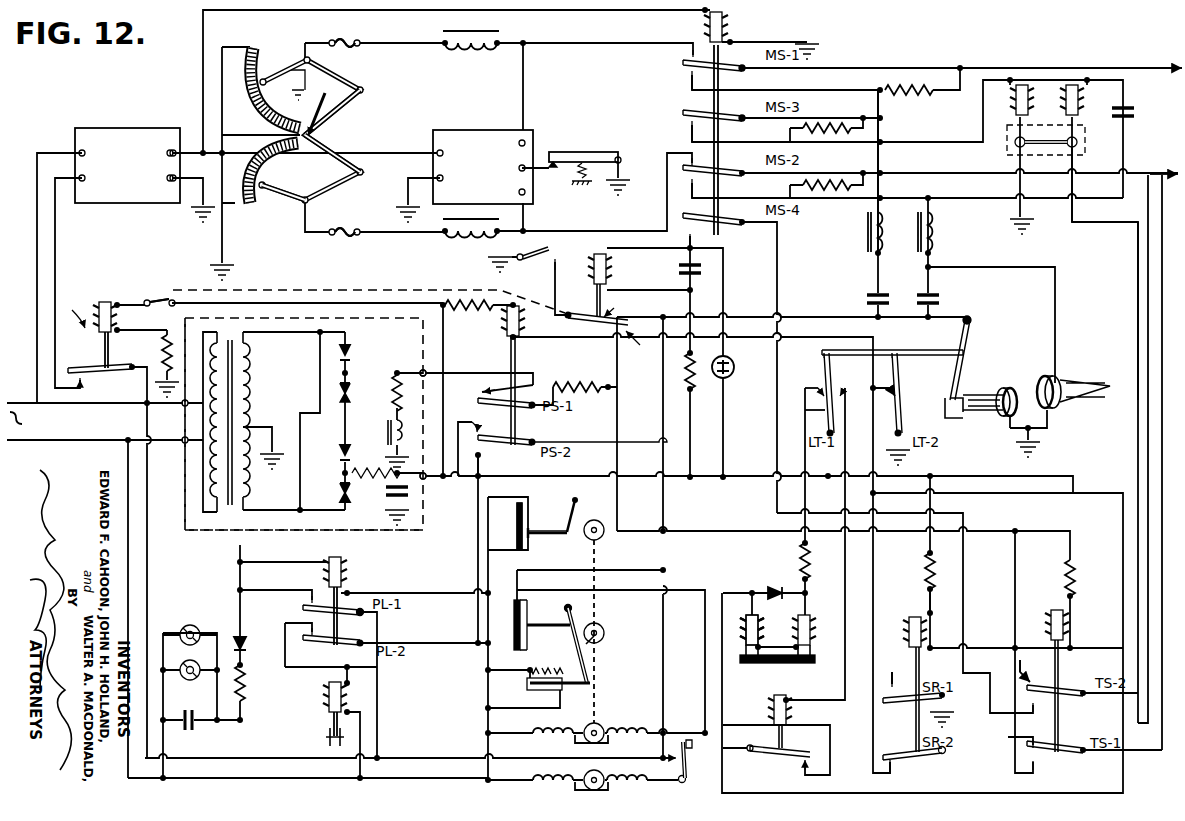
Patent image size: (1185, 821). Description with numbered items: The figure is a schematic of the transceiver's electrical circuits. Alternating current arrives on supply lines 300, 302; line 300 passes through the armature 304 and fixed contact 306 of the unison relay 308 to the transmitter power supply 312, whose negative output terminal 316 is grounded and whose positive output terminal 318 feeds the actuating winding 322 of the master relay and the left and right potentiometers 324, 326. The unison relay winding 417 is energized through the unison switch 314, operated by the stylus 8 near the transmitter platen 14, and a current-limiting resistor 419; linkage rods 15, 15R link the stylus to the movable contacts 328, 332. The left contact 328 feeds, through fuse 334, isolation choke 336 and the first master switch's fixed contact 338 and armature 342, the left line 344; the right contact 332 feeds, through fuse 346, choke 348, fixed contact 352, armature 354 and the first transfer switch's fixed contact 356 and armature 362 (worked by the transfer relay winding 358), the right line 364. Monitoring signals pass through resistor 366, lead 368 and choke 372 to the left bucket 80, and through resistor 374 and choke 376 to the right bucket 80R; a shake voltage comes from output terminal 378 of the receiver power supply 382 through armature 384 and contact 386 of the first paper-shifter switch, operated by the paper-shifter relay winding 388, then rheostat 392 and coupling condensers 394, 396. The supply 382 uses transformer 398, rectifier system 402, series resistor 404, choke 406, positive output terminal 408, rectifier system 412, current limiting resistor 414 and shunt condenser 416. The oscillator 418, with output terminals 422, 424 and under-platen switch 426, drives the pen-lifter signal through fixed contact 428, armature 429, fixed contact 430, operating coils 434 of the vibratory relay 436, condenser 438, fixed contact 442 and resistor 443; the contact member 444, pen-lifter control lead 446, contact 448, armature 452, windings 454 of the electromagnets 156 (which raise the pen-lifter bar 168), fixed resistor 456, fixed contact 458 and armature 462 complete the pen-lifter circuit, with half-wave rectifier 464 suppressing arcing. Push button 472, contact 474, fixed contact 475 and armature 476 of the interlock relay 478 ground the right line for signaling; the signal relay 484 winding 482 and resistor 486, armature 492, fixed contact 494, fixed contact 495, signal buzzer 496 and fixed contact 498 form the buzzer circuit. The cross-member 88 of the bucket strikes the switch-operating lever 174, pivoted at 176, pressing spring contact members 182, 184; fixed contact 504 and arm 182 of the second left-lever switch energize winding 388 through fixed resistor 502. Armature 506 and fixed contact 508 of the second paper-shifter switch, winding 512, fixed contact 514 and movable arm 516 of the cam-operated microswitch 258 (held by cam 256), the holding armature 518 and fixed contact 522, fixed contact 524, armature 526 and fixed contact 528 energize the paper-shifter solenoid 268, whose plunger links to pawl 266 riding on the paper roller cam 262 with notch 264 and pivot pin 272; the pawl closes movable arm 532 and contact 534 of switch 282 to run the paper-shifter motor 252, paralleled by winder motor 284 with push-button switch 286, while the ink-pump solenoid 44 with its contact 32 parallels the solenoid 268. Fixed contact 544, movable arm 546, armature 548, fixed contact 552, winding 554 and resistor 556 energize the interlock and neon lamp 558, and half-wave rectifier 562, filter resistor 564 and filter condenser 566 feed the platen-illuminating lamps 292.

The transmitter stylus 8 is at (316, 103).
The transmitter platen 14 is at (581, 152).
The upper linkage rod 15 is at (352, 99).
The lower linkage rod 15R is at (338, 143).
The contact 32 is at (323, 740).
The ink-pump solenoid 44 is at (328, 695).
The left bucket 80 is at (1004, 385).
The right bucket 80R is at (1060, 379).
The cross-member 88 is at (958, 416).
The electromagnets 156 is at (740, 637).
The pen-lifter bar 168 is at (778, 663).
The switch-operating lever 174 is at (962, 340).
The pivot 176 is at (963, 320).
The spring contact member 182 is at (897, 424).
The spring contact member 184 is at (808, 393).
The paper-shifter motor 252 is at (604, 728).
The cam 256 is at (589, 519).
The cam-operated microswitch 258 is at (562, 497).
The paper roller cam 262 is at (602, 630).
The notch 264 is at (600, 640).
The pawl 266 is at (588, 670).
The paper-shifter solenoid 268 is at (530, 695).
The pivot pin 272 is at (572, 607).
The switch 282 is at (558, 611).
The winder motor 284 is at (605, 785).
The push-button switch 286 is at (686, 742).
The platen-illuminating lamps 292 is at (180, 662).
The supply line 300 is at (33, 401).
The supply line 302 is at (13, 440).
The armature 304 is at (106, 366).
The fixed contact 306 is at (86, 376).
The unison relay 308 is at (88, 306).
The transmitter power supply 312 is at (75, 128).
The unison switch 314 is at (164, 300).
The negative output terminal 316 is at (166, 179).
The positive output terminal 318 is at (166, 153).
The actuating winding 322 is at (728, 26).
The left potentiometer 324 is at (255, 48).
The right potentiometer 326 is at (251, 167).
The movable contact 328 is at (304, 60).
The movable contact 332 is at (283, 194).
The protecting fuse 334 is at (352, 42).
The isolation choke 336 is at (473, 46).
The fixed contact 338 is at (690, 52).
The armature 342 is at (742, 70).
The left line 344 is at (1178, 66).
The protective fuse 346 is at (333, 236).
The isolating choke 348 is at (466, 236).
The fixed contact 352 is at (680, 158).
The armature 354 is at (742, 174).
The fixed contact 356 is at (1008, 737).
The transfer relay winding 358 is at (1065, 624).
The armature 362 is at (1083, 752).
The right line 364 is at (1180, 171).
The resistor 366 is at (914, 96).
The lead 368 is at (879, 161).
The isolation choke 372 is at (866, 232).
The resistor 374 is at (805, 184).
The isolation choke 376 is at (934, 232).
The output terminal 378 is at (421, 370).
The receiver power supply 382 is at (184, 474).
The armature 384 is at (529, 408).
The contact 386 is at (479, 384).
The paper-shifter relay winding 388 is at (499, 305).
The rheostat 392 is at (590, 395).
The coupling condenser 394 is at (867, 295).
The coupling condenser 396 is at (938, 300).
The transformer 398 is at (225, 531).
The full-wave rectifier system 402 is at (335, 355).
The series resistor 404 is at (394, 390).
The choke 406 is at (388, 432).
The positive output terminal 408 is at (425, 479).
The full-wave rectifier system 412 is at (335, 473).
The current limiting resistor 414 is at (372, 462).
The shunt condenser 416 is at (387, 504).
The energizing winding 417 is at (104, 306).
The oscillator 418 is at (478, 129).
The current-limiting resistor 419 is at (166, 350).
The output terminal 422 is at (518, 145).
The output terminal 424 is at (518, 191).
The under-platen switch 426 is at (582, 182).
The fixed contact 428 is at (679, 78).
The armature 429 is at (742, 119).
The fixed contact 430 is at (683, 124).
The operating coils 434 is at (1068, 82).
The vibratory relay 436 is at (1003, 152).
The condenser 438 is at (1127, 113).
The fixed contact 442 is at (680, 181).
The resistor 443 is at (806, 127).
The contact member 444 is at (1061, 155).
The pen-lifter control lead 446 is at (1138, 273).
The contact 448 is at (1036, 663).
The armature 452 is at (1082, 696).
The energizing windings 454 is at (748, 612).
The fixed resistor 456 is at (808, 563).
The fixed contact 458 is at (806, 387).
The armature 462 is at (822, 353).
The half-wave rectifier 464 is at (775, 588).
The push button 472 is at (537, 258).
The contact 474 is at (1013, 775).
The fixed contact 475 is at (643, 345).
The armature 476 is at (598, 328).
The interlock relay 478 is at (651, 315).
The energizing winding 482 is at (930, 622).
The signal relay 484 is at (928, 610).
The current-limiting resistor 486 is at (930, 564).
The armature 492 is at (891, 706).
The fixed contact 494 is at (886, 669).
The fixed contact 495 is at (1032, 713).
The signal buzzer 496 is at (768, 713).
The fixed contact 498 is at (839, 389).
The fixed resistor 502 is at (494, 320).
The fixed contact 504 is at (897, 378).
The movable armature 506 is at (530, 443).
The fixed contact 508 is at (458, 438).
The energizing winding 512 is at (342, 574).
The fixed contact 514 is at (518, 548).
The movable arm 516 is at (528, 538).
The movable armature 518 is at (355, 614).
The fixed contact 522 is at (337, 602).
The fixed contact 524 is at (482, 456).
The movable armature 526 is at (334, 646).
The fixed contact 528 is at (287, 624).
The movable arm 532 is at (534, 632).
The contact 534 is at (530, 676).
The fixed contact 544 is at (891, 766).
The movable arm 546 is at (905, 745).
The movable armature 548 is at (742, 225).
The fixed contact 552 is at (681, 232).
The energizing winding 554 is at (608, 265).
The current-limiting resistor 556 is at (686, 382).
The neon lamp 558 is at (734, 375).
The half-wave rectifier 562 is at (238, 637).
The filter resistor 564 is at (244, 690).
The filter condenser 566 is at (192, 732).